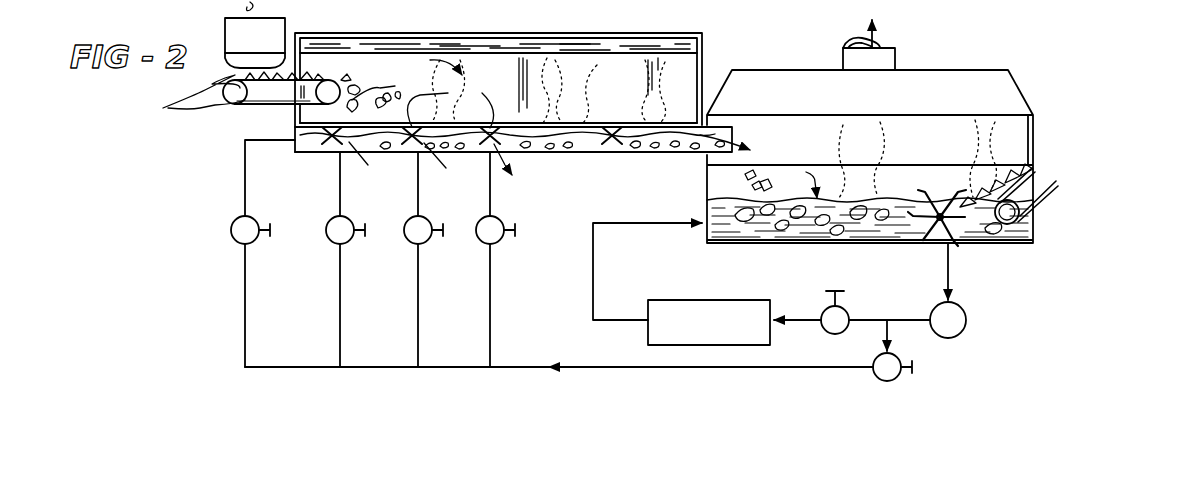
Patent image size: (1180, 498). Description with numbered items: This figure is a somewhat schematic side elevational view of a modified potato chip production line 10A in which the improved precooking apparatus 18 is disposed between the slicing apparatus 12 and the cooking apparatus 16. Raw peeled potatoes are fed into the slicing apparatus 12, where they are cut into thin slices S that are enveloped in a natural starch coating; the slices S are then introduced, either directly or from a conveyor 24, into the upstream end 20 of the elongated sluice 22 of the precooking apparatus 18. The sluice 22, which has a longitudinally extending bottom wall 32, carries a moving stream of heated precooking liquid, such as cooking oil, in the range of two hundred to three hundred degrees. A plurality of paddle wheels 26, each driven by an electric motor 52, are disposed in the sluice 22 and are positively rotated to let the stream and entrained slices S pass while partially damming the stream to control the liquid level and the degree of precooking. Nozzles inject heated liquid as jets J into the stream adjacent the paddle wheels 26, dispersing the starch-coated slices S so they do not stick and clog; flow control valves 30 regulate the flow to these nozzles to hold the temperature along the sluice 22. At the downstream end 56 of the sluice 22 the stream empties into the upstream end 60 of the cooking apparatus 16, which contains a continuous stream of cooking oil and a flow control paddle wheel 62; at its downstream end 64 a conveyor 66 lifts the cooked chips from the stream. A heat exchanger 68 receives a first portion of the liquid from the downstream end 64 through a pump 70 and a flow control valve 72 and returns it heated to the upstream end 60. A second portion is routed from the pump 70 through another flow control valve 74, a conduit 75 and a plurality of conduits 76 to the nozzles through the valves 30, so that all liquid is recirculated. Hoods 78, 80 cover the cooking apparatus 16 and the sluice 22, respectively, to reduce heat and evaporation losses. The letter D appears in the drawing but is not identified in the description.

The modified production line 10A is at (1055, 61).
The slicing apparatus 12 is at (288, 21).
The cooking apparatus 16 is at (1038, 147).
The precooking apparatus 18 is at (706, 61).
The upstream end of sluice 20 is at (295, 128).
The elongated sluice 22 is at (535, 157).
The conveyor 24 is at (306, 79).
The paddle wheels 26 is at (638, 102).
The flow control valves 30 is at (330, 243).
The bottom wall 32 is at (606, 156).
The electric motor 52 is at (418, 0).
The downstream end of sluice 56 is at (735, 134).
The upstream end of cooking apparatus 60 is at (700, 238).
The flow control paddle wheel 62 is at (948, 200).
The downstream end of cooking apparatus 64 is at (1038, 241).
The conveyor 66 is at (1040, 206).
The heat exchanger 68 is at (702, 299).
The pump 70 is at (966, 320).
The flow control valve 72 is at (848, 306).
The flow control valve 74 is at (890, 383).
The conduit 75 is at (593, 370).
The conduits 76 is at (339, 328).
The hood 78 is at (940, 76).
The hood 80 is at (598, 33).
The thin potato slices S is at (301, 91).
The jets J is at (430, 169).
The dough pieces D is at (502, 99).